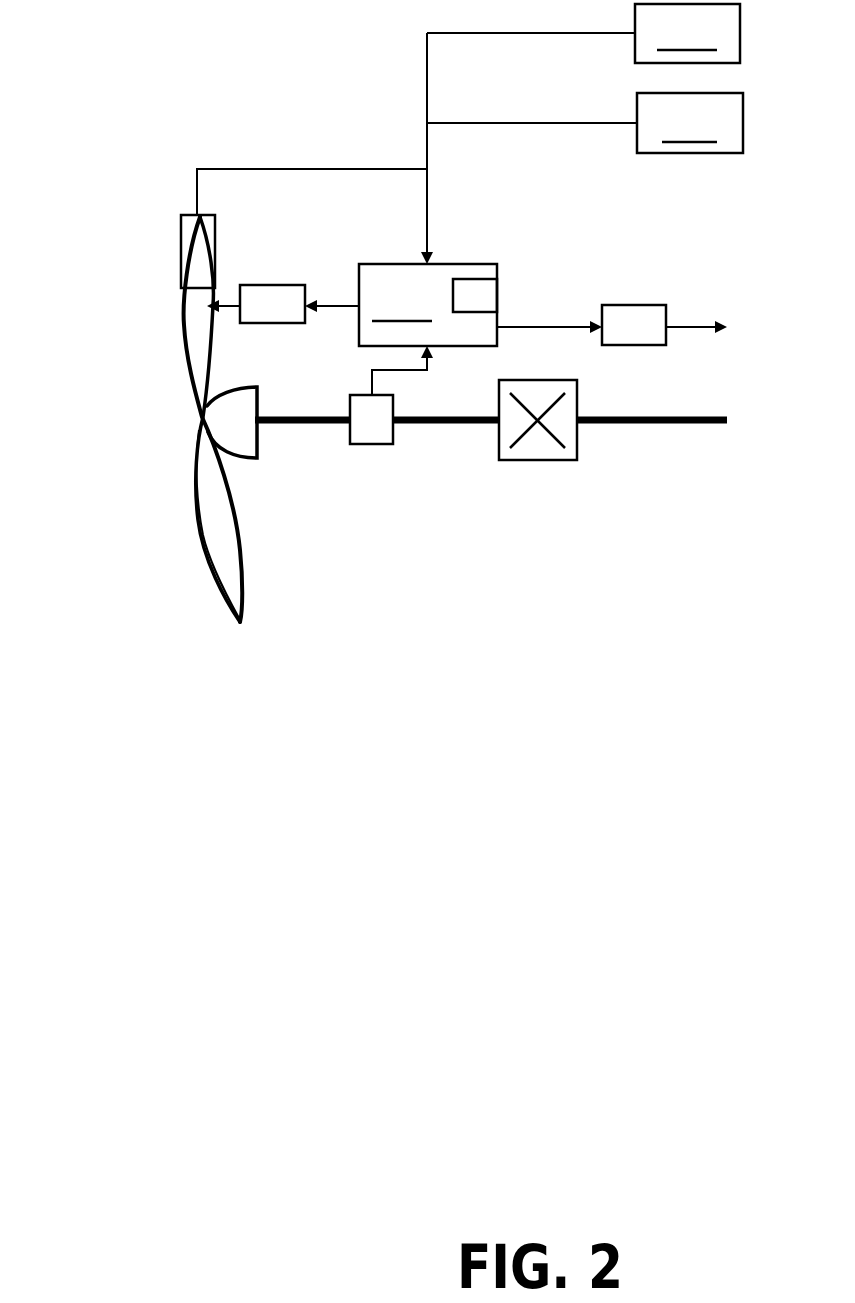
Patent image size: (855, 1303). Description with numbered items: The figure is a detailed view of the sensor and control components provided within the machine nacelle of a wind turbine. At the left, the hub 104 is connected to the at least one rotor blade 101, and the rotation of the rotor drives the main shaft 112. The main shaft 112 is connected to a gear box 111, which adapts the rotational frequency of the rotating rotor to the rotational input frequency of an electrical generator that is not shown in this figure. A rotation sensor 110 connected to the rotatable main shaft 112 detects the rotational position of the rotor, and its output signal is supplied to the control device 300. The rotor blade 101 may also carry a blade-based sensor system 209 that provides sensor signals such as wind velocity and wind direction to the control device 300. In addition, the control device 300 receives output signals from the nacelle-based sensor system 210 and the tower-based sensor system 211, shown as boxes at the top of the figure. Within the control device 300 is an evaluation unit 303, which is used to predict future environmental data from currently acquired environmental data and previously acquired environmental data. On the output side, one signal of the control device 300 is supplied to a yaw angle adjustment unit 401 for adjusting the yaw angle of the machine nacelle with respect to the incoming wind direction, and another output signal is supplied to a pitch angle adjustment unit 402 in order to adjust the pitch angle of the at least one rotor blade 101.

The rotor blade 101 is at (203, 520).
The hub 104 is at (244, 397).
The main shaft 112 is at (285, 428).
The rotation sensor 110 is at (372, 445).
The gear box 111 is at (537, 460).
The blade-based sensor system 209 is at (182, 262).
The control device 300 is at (453, 305).
The evaluation unit 303 is at (480, 297).
The pitch angle adjustment unit 402 is at (273, 285).
The yaw angle adjustment unit 401 is at (633, 305).
The nacelle-based sensor system 210 is at (580, 134).
The tower-based sensor system 211 is at (585, 123).